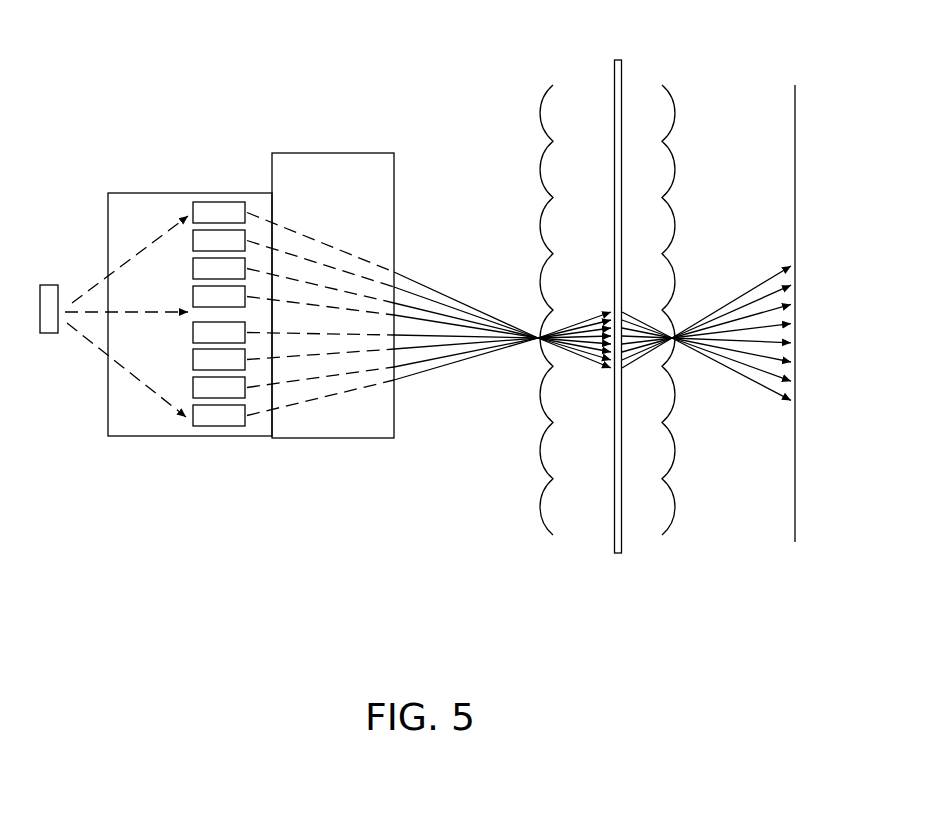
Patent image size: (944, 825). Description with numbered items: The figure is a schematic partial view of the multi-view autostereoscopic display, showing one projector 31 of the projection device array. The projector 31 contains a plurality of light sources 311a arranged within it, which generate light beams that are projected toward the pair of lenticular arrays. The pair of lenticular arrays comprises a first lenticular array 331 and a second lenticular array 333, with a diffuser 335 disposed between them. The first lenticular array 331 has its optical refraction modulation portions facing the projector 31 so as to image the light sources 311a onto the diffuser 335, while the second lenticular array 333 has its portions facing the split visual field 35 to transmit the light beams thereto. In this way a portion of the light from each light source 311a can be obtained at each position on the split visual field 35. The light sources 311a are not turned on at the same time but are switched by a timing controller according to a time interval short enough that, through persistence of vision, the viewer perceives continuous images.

The projector 31 is at (131, 428).
The light source 311a is at (221, 210).
The first lenticular array 331 is at (542, 103).
The second lenticular array 333 is at (672, 100).
The diffuser 335 is at (618, 58).
The split visual field 35 is at (797, 112).